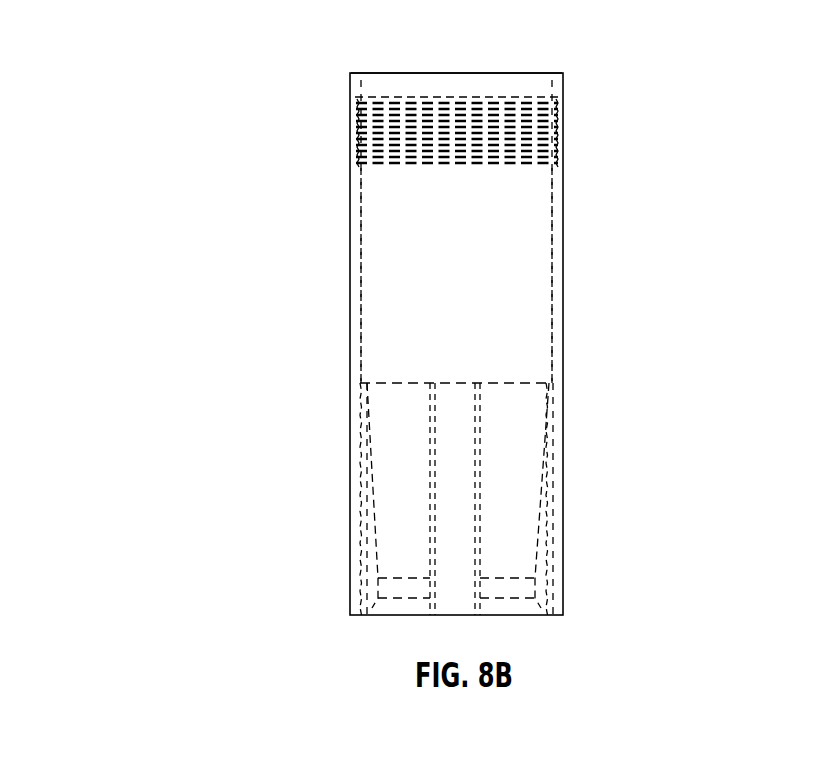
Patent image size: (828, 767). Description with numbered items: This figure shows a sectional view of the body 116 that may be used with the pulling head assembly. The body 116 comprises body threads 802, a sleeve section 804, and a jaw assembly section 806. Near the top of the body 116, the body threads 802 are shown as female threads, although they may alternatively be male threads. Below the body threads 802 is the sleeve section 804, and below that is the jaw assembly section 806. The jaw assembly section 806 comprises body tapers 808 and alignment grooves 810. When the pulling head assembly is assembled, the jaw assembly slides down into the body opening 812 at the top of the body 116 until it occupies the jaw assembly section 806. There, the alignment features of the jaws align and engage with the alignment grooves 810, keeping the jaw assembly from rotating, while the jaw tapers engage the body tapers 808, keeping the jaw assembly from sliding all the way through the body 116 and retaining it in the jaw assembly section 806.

The body 116 is at (318, 121).
The body threads 802 is at (455, 118).
The sleeve section 804 is at (398, 256).
The jaw assembly section 806 is at (390, 440).
The body tapers 808 is at (383, 508).
The alignment grooves 810 is at (457, 507).
The body opening 812 is at (537, 71).